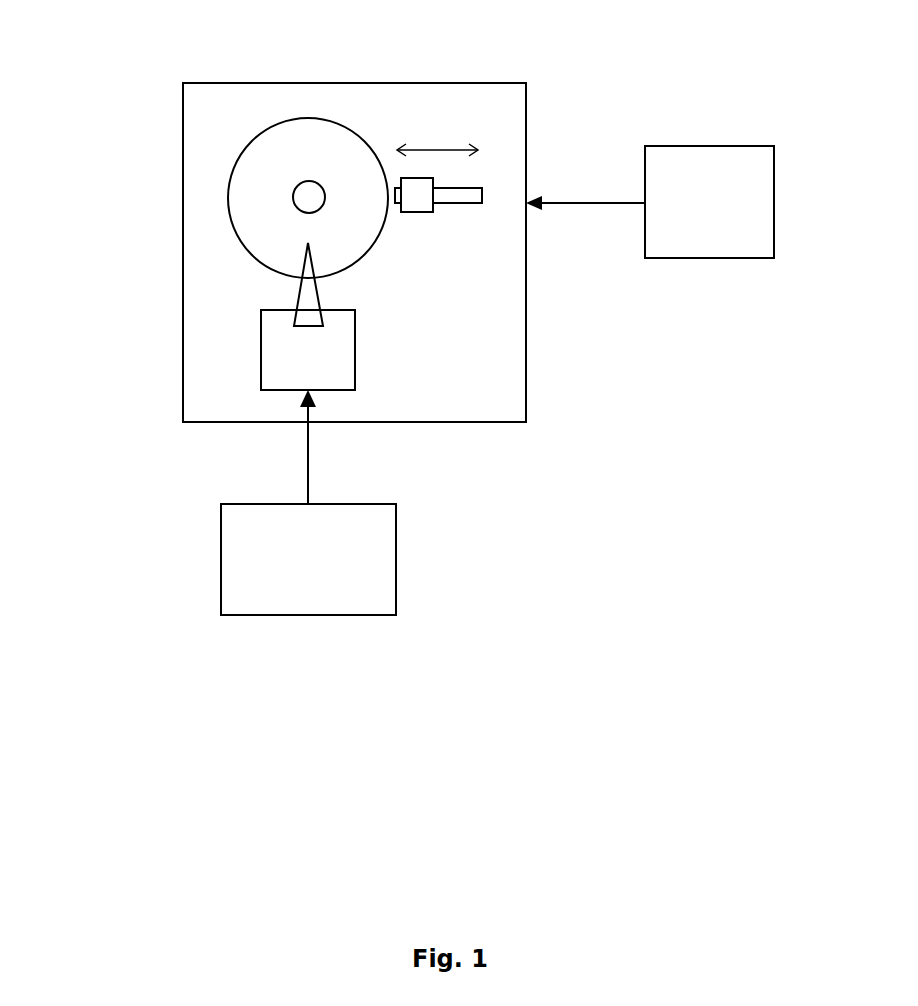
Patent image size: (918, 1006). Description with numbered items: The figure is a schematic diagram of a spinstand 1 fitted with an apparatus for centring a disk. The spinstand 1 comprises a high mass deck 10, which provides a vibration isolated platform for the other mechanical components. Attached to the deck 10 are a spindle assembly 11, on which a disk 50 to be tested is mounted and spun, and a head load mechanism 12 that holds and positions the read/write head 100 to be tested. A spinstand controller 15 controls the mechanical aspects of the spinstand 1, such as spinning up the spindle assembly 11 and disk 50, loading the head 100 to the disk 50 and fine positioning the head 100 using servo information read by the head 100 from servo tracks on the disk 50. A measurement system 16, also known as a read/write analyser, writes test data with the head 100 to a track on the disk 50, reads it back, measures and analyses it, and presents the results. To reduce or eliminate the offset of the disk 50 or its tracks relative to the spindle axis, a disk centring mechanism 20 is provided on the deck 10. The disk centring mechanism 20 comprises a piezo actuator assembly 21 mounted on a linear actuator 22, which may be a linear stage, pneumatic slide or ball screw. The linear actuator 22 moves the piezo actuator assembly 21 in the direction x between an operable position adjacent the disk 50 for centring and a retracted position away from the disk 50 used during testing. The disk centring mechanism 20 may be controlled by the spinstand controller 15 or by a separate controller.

The spinstand 1 is at (548, 463).
The high mass deck 10 is at (227, 102).
The spindle assembly 11 is at (309, 193).
The head load mechanism 12 is at (277, 357).
The spinstand controller 15 is at (719, 158).
The measurement system 16 is at (325, 602).
The disk centring mechanism 20 is at (497, 246).
The piezo actuator assembly 21 is at (418, 205).
The linear actuator 22 is at (460, 197).
The disk 50 is at (247, 195).
The read/write head 100 is at (307, 290).